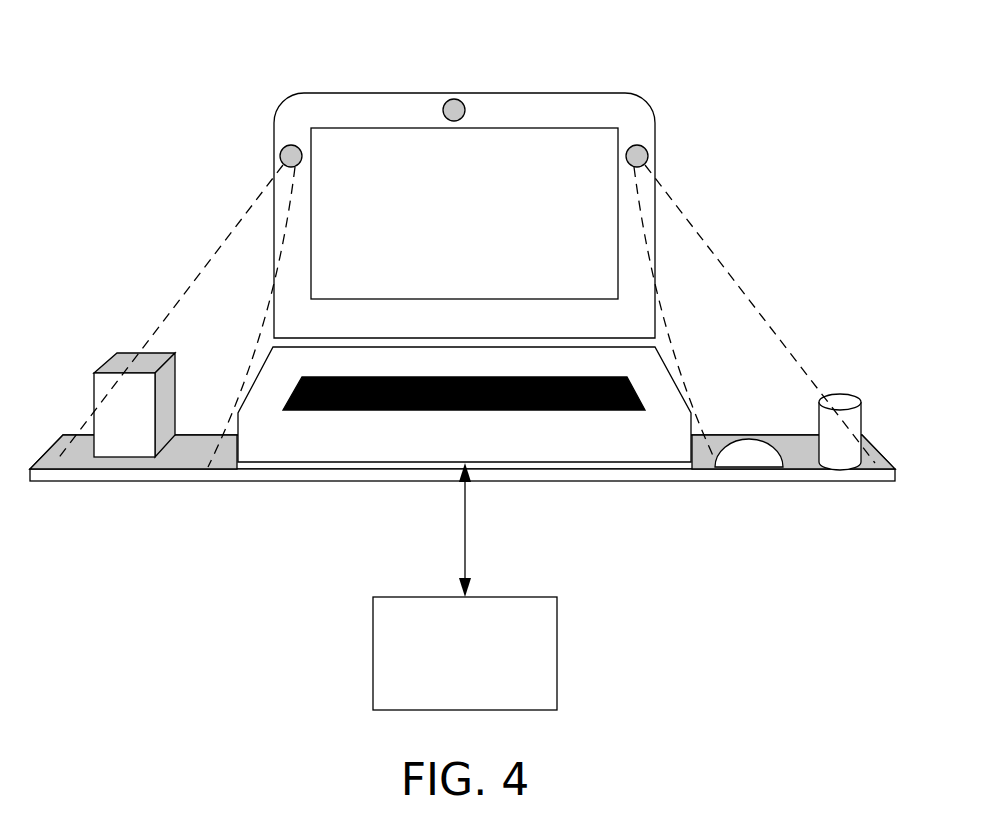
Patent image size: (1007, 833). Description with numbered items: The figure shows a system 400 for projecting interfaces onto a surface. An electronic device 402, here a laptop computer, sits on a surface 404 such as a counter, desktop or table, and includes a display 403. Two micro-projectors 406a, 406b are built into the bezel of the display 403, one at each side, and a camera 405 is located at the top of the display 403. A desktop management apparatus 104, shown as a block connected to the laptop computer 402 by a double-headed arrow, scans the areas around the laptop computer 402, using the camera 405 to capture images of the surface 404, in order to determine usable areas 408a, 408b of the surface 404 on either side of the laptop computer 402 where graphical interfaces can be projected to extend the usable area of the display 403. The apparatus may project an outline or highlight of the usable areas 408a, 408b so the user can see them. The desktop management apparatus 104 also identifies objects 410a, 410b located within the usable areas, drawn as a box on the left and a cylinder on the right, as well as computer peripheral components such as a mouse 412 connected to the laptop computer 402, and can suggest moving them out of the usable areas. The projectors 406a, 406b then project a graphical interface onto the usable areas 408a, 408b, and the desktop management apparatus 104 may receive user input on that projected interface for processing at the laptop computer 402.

The system 400 is at (170, 40).
The electronic device 402 is at (275, 122).
The display 403 is at (464, 213).
The surface 404 is at (255, 478).
The camera 405 is at (444, 110).
The projector 406a is at (302, 156).
The projector 406b is at (626, 156).
The usable area 408a is at (60, 464).
The usable area 408b is at (808, 464).
The object 410a is at (137, 458).
The object 410b is at (862, 434).
The mouse 412 is at (753, 470).
The desktop management apparatus 104 is at (465, 586).